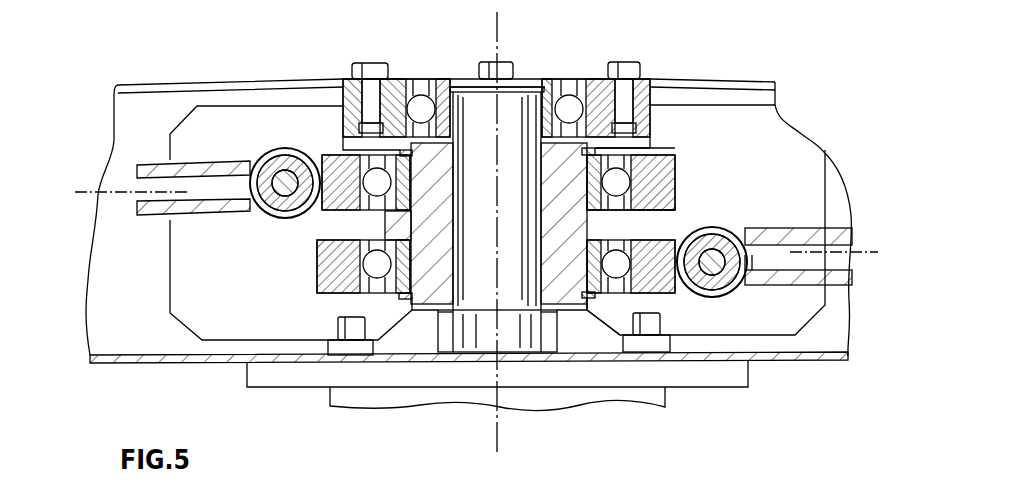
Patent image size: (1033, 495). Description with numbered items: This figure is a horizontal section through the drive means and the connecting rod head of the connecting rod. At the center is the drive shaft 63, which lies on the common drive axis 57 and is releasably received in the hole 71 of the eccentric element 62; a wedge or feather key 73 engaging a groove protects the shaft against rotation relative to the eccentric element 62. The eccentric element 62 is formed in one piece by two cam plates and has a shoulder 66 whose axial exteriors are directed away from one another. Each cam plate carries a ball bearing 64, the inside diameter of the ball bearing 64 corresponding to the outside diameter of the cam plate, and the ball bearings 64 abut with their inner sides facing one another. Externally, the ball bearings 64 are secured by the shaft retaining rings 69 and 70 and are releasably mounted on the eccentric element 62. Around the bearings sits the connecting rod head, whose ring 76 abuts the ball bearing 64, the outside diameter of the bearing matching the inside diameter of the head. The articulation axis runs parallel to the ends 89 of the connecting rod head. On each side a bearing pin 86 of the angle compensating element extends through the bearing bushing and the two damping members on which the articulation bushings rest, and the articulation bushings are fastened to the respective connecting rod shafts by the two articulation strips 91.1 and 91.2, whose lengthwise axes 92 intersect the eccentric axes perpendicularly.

The drive axis 57 is at (493, 418).
The eccentric element 62 is at (437, 312).
The drive shaft 63 is at (517, 98).
The ball bearing 64 is at (353, 287).
The shoulder 66 is at (590, 222).
The shaft retaining ring 69 is at (580, 298).
The shaft retaining ring 70 is at (595, 148).
The hole 71 is at (470, 285).
The wedge or feather key 73 is at (540, 300).
The ring 76 is at (325, 260).
The bearing pin 86 is at (273, 197).
The end of connecting rod head 89 is at (333, 157).
The articulation strip 91.1 is at (152, 165).
The articulation strip 91.2 is at (148, 216).
The lengthwise axis 92 is at (85, 192).